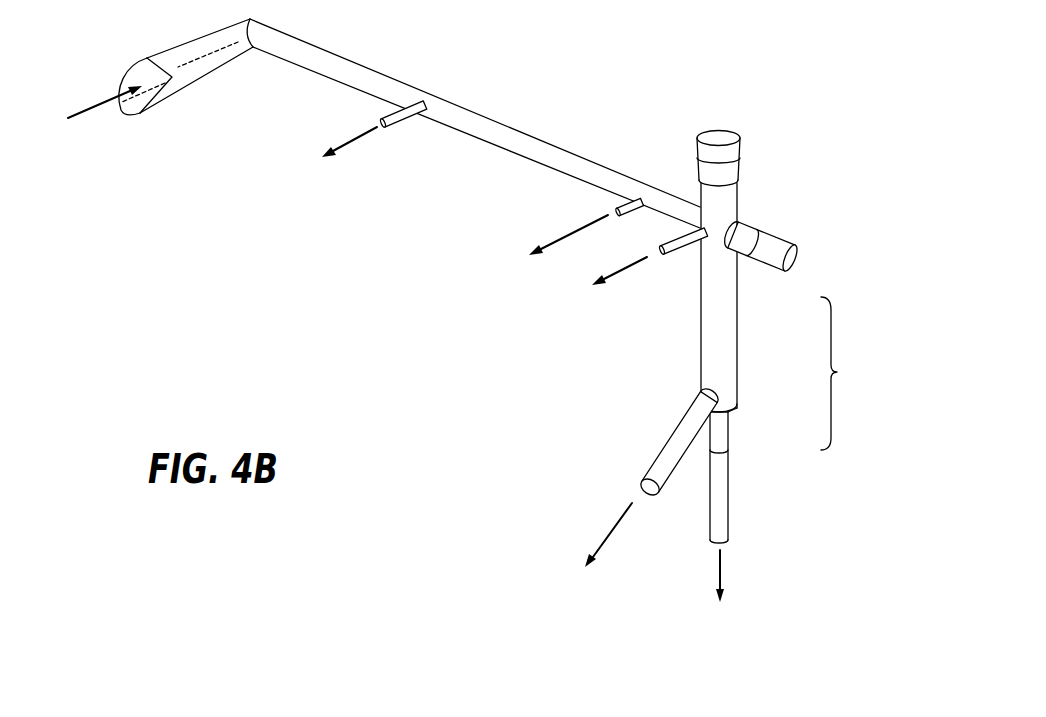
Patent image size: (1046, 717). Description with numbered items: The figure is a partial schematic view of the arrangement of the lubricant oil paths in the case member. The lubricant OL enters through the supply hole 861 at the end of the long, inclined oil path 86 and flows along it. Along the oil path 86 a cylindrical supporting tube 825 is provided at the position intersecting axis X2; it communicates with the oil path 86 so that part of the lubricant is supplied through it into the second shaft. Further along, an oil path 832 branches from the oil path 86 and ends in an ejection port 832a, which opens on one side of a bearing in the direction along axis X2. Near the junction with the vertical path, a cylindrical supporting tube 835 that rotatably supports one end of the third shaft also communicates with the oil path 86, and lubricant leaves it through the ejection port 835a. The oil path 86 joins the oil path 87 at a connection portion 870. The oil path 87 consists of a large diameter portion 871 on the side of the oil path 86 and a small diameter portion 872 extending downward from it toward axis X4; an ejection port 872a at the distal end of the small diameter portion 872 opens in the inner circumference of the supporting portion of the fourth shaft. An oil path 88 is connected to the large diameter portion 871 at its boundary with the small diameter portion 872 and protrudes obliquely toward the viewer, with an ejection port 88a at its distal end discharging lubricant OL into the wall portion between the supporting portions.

The oil path 86 is at (507, 137).
The supply hole 861 is at (141, 63).
The supporting tube 825 is at (397, 110).
The oil path 832 is at (628, 200).
The ejection port 832a is at (383, 123).
The supporting tube 835 is at (680, 250).
The ejection port 835a is at (660, 250).
The connection portion 870 is at (790, 270).
The oil path 87 is at (847, 373).
The large diameter portion 871 is at (720, 333).
The small diameter portion 872 is at (727, 428).
The ejection port 872a is at (723, 543).
The oil path 88 is at (662, 448).
The ejection port 88a is at (637, 493).